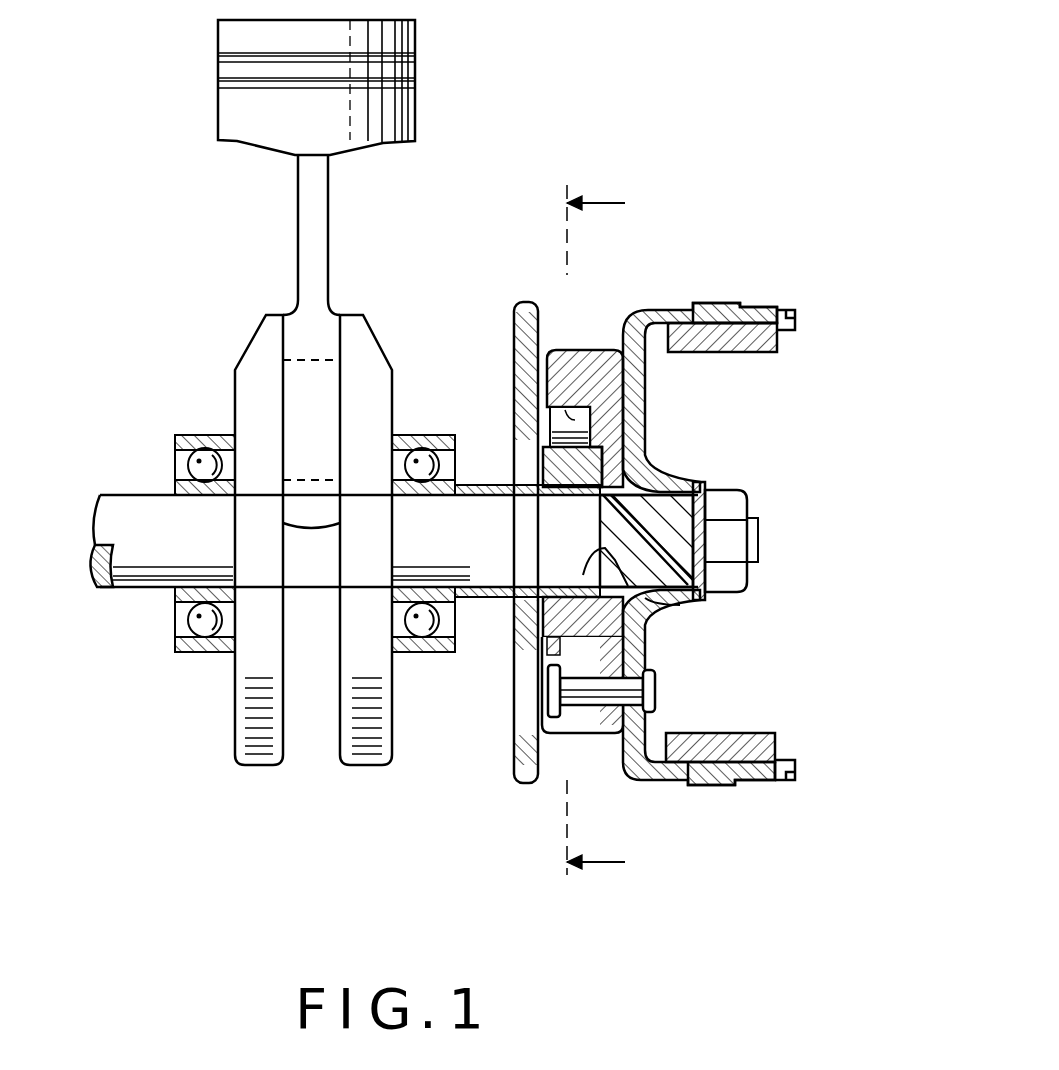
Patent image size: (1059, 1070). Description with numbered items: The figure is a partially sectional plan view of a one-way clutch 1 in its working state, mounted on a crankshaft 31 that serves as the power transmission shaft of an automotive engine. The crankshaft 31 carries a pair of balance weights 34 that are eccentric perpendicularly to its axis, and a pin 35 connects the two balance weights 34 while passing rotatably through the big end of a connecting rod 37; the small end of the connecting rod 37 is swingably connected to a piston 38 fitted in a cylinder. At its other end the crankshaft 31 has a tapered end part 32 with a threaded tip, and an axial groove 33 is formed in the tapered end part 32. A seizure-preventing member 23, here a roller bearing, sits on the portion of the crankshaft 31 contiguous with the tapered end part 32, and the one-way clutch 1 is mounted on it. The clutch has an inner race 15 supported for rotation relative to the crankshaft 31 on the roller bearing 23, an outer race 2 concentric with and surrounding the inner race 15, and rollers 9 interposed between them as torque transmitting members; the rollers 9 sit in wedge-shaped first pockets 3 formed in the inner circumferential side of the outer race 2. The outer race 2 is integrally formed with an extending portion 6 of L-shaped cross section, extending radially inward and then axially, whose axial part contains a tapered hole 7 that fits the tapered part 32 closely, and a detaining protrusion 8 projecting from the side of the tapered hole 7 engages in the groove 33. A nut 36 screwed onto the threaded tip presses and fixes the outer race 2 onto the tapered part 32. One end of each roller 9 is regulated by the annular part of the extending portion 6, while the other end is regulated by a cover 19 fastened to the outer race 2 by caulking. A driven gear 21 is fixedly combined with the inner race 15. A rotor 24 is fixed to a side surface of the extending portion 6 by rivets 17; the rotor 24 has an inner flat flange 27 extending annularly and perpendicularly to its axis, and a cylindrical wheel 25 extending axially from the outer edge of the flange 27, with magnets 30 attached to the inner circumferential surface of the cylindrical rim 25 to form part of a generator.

The one-way clutch 1 is at (562, 325).
The outer race 2 is at (645, 385).
The first pocket 3 is at (553, 430).
The extending portion 6 is at (657, 620).
The tapered hole 7 is at (590, 555).
The detaining protrusion 8 is at (600, 500).
The roller 9 is at (557, 432).
The inner race 15 is at (590, 457).
The rivet 17 is at (657, 690).
The cover 19 is at (598, 350).
The driven gear 21 is at (520, 760).
The seizure-preventing member 23 is at (540, 485).
The rotor 24 is at (790, 306).
The cylindrical wheel 25 is at (708, 300).
The inner flat flange 27 is at (638, 772).
The magnet 30 is at (778, 345).
The crankshaft 31 is at (132, 500).
The tapered end part 32 is at (680, 605).
The axial groove 33 is at (660, 490).
The balance weight 34 is at (258, 765).
The pin 35 is at (310, 357).
The nut 36 is at (750, 500).
The connecting rod 37 is at (298, 210).
The piston 38 is at (218, 110).